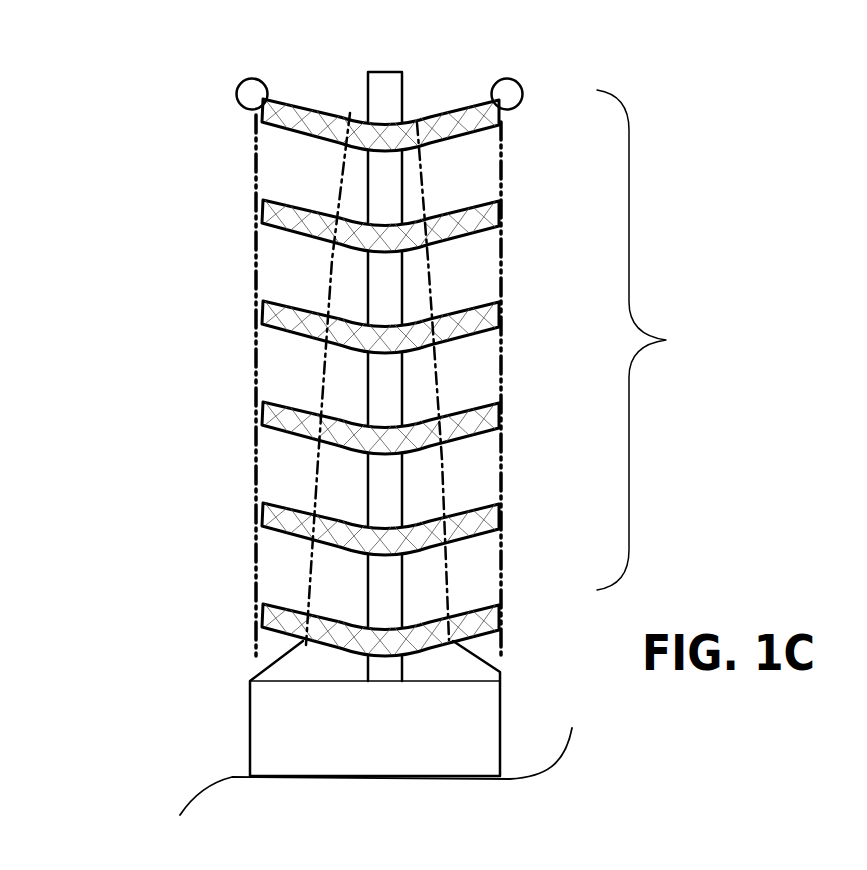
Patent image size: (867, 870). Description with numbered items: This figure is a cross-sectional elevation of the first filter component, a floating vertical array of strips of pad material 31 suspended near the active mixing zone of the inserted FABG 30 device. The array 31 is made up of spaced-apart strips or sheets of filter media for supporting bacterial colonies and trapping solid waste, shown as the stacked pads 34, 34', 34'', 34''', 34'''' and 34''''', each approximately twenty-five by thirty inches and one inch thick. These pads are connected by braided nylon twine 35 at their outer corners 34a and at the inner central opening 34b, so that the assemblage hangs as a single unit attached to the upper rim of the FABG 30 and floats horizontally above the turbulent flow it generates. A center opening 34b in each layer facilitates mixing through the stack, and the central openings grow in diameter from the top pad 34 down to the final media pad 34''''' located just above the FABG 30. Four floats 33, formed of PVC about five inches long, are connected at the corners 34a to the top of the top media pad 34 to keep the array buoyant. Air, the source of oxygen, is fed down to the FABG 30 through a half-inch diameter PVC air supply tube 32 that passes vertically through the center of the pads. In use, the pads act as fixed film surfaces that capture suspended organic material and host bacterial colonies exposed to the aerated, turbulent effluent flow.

The FABG device 30 is at (260, 718).
The floating vertical array of strips of pad material 31 is at (662, 340).
The PVC air supply tube 32 is at (388, 300).
The floats 33 is at (553, 157).
The filter pad 34 is at (382, 98).
The filter pad 34' is at (318, 236).
The filter pad 34'' is at (315, 341).
The filter pad 34''' is at (317, 434).
The filter pad 34'''' is at (317, 536).
The final media pad 34''''' is at (317, 634).
The outer corners 34a is at (565, 32).
The inner central opening 34b is at (363, 133).
The braided nylon twine 35 is at (503, 462).